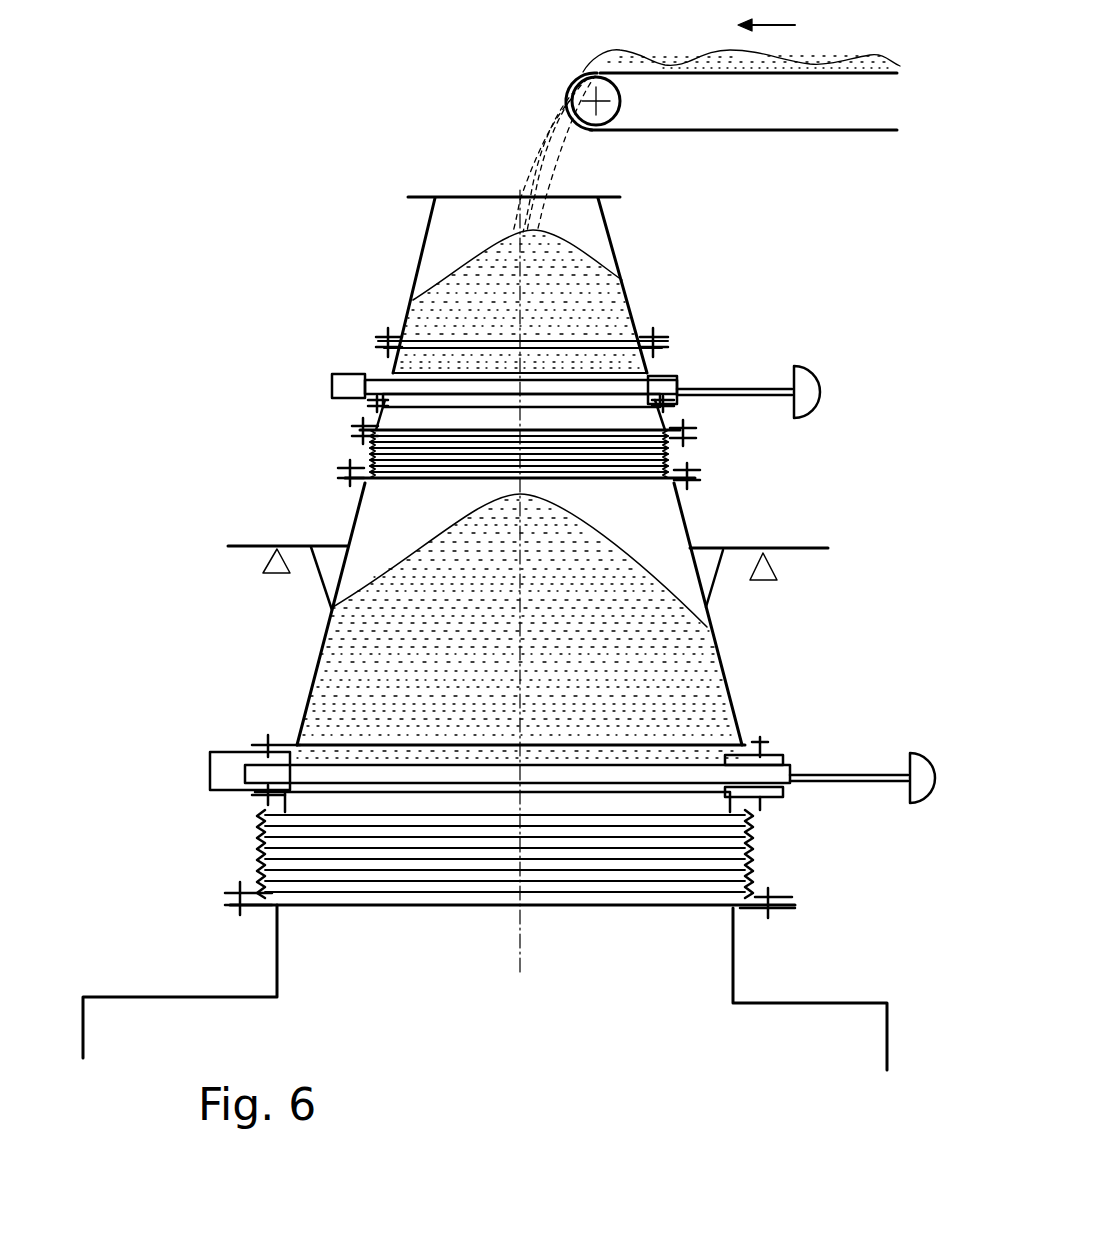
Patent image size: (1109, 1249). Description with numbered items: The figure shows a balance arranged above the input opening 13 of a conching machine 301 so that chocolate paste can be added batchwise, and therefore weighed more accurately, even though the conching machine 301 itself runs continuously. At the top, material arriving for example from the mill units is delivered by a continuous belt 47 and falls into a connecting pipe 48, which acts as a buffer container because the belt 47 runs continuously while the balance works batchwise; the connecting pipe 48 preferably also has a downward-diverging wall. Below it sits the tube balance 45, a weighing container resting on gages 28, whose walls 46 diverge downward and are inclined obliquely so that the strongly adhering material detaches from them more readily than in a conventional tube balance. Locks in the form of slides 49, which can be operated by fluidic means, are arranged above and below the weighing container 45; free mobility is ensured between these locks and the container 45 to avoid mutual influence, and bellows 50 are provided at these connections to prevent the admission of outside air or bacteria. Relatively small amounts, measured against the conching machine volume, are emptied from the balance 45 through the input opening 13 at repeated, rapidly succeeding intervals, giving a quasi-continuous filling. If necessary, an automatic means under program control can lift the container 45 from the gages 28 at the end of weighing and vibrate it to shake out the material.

The input opening 13 is at (306, 945).
The gages 28 is at (262, 568).
The tube balance 45 is at (782, 489).
The walls 46 is at (322, 631).
The continuous belt 47 is at (770, 136).
The connecting pipe 48 is at (425, 249).
The slides 49 is at (740, 387).
The bellows 50 is at (360, 461).
The conching machine 301 is at (804, 994).